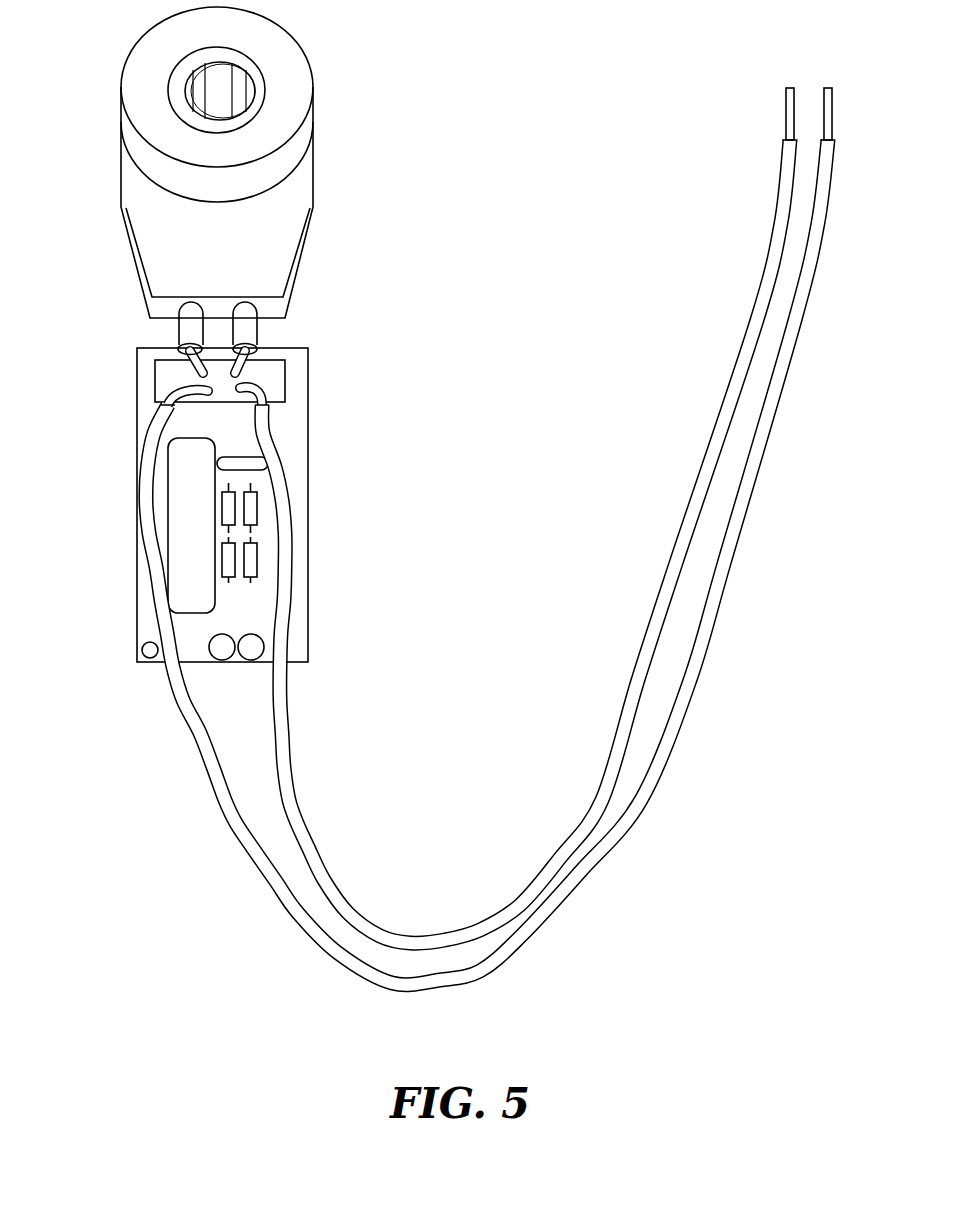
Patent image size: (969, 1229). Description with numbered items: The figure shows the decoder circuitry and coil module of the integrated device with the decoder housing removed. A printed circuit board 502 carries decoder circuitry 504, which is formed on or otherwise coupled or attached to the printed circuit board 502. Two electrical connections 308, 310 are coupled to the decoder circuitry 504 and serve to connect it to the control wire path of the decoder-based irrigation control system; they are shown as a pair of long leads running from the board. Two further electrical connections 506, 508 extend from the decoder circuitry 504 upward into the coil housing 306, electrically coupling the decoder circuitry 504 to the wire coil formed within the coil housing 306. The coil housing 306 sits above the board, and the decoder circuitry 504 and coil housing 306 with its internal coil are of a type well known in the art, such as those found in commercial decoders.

The coil housing 306 is at (121, 90).
The electrical connection 308 is at (187, 698).
The electrical connection 310 is at (285, 698).
The printed circuit board 502 is at (147, 417).
The decoder circuitry 504 is at (192, 508).
The electrical connection 506 is at (243, 323).
The electrical connection 508 is at (187, 325).